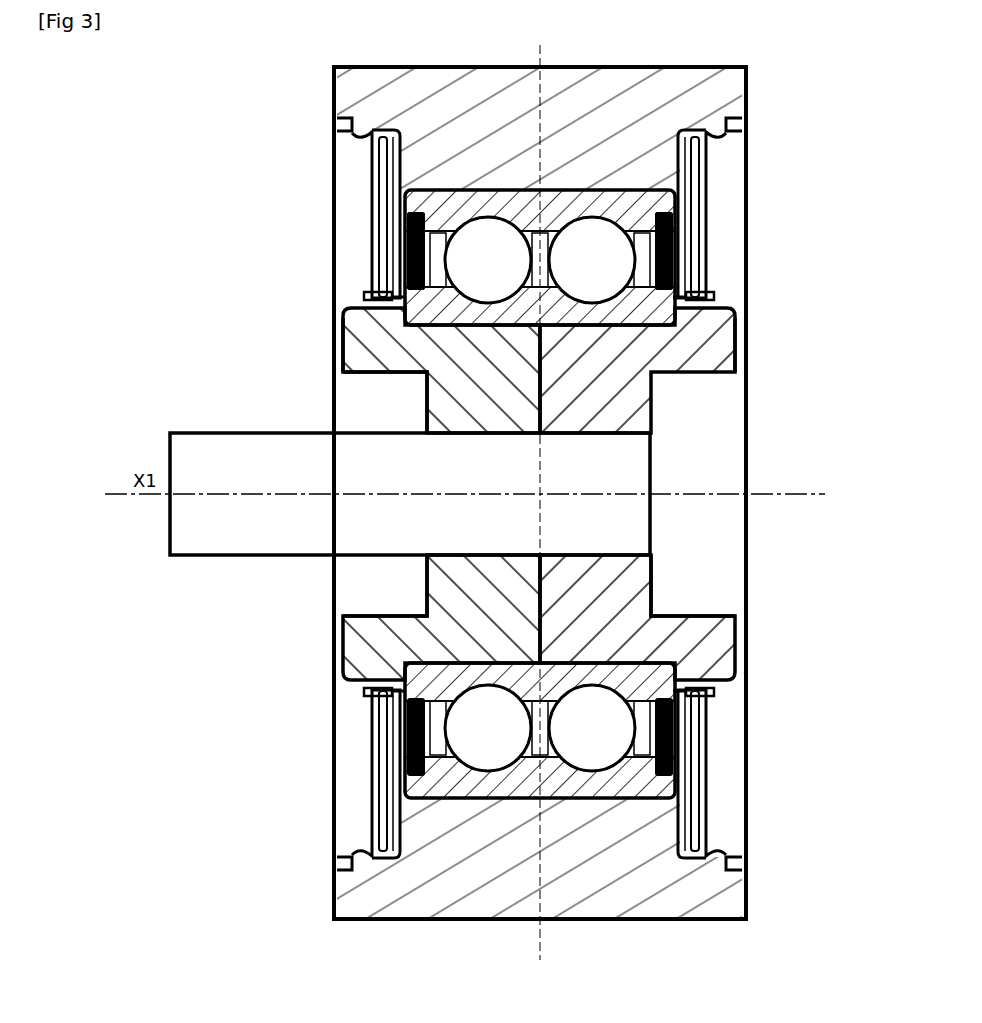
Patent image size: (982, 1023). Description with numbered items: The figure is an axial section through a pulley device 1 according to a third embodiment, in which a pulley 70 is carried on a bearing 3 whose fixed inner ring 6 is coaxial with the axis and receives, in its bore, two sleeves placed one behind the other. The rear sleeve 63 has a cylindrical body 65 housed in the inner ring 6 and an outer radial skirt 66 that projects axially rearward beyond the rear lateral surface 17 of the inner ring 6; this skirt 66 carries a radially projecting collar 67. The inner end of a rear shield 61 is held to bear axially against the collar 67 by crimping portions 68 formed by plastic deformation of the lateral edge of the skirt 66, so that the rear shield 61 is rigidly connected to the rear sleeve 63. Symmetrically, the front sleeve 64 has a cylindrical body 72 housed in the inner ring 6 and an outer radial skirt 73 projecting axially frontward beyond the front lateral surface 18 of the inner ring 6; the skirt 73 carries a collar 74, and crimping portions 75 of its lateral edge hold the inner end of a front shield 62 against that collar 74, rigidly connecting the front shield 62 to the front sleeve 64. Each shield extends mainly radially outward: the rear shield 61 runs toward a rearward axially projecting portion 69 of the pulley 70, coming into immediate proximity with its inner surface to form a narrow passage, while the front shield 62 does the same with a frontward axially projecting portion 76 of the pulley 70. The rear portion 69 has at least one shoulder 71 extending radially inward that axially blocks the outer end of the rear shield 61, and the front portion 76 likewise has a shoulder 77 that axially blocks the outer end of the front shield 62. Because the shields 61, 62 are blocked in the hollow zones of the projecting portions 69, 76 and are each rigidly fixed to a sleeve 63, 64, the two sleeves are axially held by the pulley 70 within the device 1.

The pulley device 1 is at (152, 575).
The bearing 3 is at (466, 741).
The inner ring 6 is at (436, 320).
The rear lateral surface 17 is at (366, 297).
The front lateral surface 18 is at (716, 302).
The rear shield 61 is at (404, 212).
The front shield 62 is at (676, 212).
The rear sleeve 63 is at (362, 604).
The front sleeve 64 is at (718, 604).
The cylindrical body 65 is at (398, 391).
The outer radial skirt 66 is at (344, 353).
The collar 67 is at (344, 641).
The crimping portions 68 is at (372, 692).
The rearward axially projecting portion 69 is at (348, 104).
The pulley 70 is at (452, 902).
The shoulder 71 is at (376, 139).
The cylindrical body 72 is at (648, 410).
The outer radial skirt 73 is at (738, 360).
The collar 74 is at (738, 650).
The crimping portions 75 is at (704, 692).
The frontward axially projecting portion 76 is at (733, 104).
The shoulder 77 is at (702, 139).